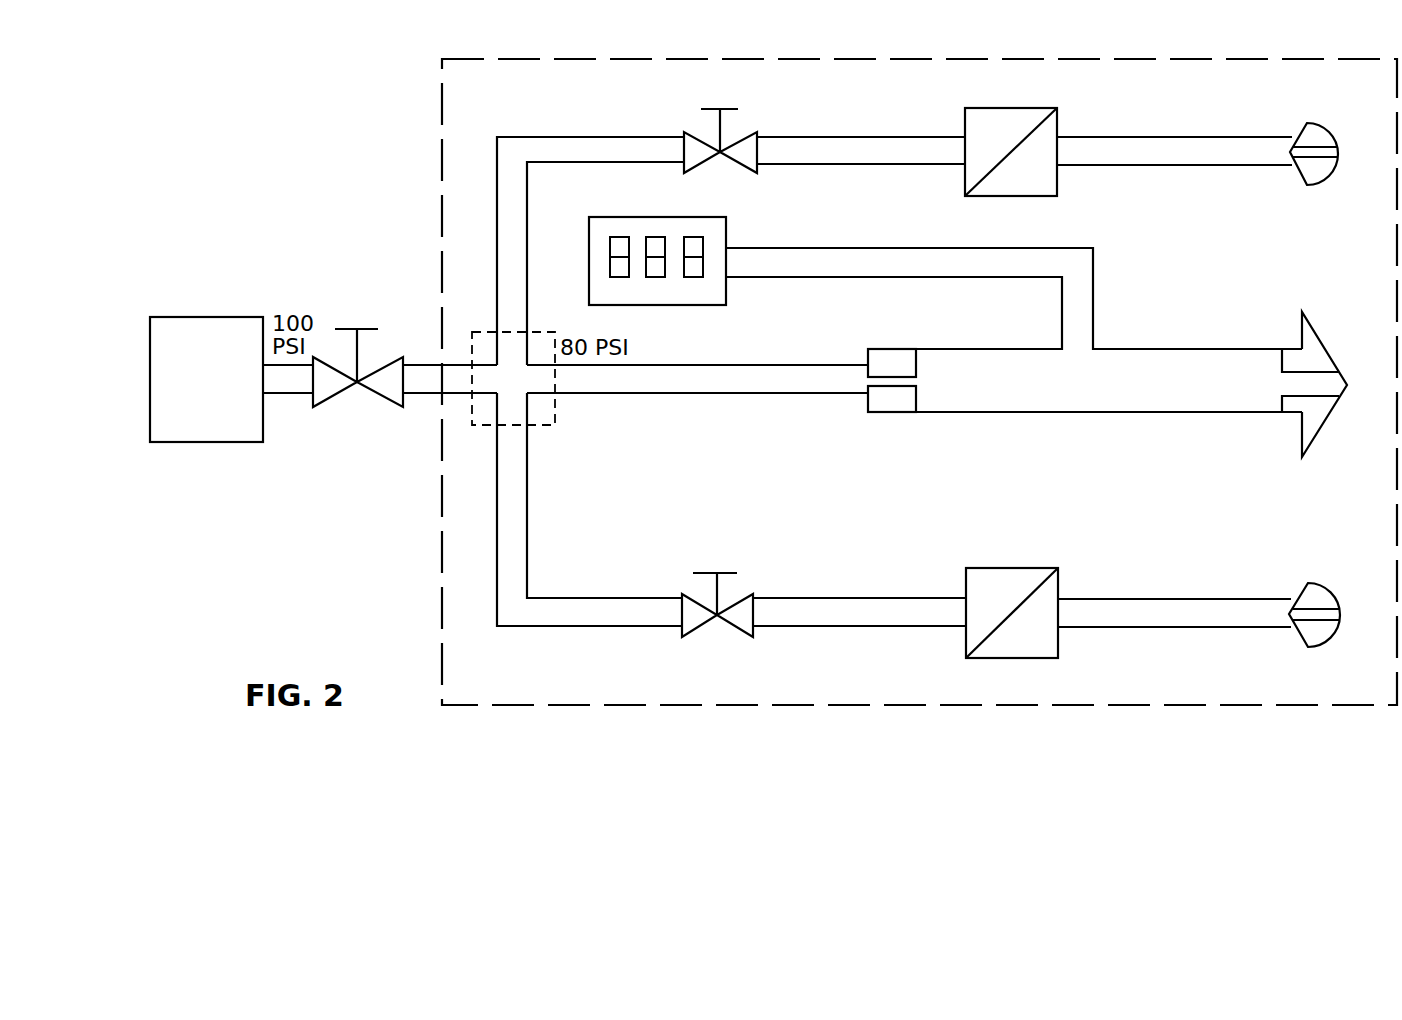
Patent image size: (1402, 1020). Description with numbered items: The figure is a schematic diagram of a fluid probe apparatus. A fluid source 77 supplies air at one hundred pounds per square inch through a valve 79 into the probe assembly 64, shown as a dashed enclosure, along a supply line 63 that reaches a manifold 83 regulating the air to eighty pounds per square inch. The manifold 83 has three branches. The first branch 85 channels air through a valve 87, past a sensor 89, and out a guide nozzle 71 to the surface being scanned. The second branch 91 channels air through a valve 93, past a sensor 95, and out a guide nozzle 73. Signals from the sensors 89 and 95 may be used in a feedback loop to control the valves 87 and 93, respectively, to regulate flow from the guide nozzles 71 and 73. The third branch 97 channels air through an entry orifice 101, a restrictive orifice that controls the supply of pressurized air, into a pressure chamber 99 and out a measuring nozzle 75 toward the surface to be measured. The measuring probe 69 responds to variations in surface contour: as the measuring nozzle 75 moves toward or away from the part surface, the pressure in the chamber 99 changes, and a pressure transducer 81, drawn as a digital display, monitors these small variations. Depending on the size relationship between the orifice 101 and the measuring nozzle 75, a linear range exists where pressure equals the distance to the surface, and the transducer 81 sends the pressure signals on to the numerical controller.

The probe assembly 64 is at (1254, 58).
The fluid source 77 is at (200, 442).
The valve 79 is at (370, 420).
The supply conduit 63 is at (427, 362).
The first branch 85 is at (497, 312).
The second branch 91 is at (497, 548).
The manifold 83 is at (556, 418).
The pressure transducer 81 is at (630, 305).
The valve 87 is at (705, 170).
The sensor 89 is at (1062, 180).
The guide nozzle 71 is at (1330, 177).
The third branch 97 is at (772, 394).
The entry orifice 101 is at (882, 381).
The pressure chamber 99 is at (1163, 413).
The measuring probe 69 is at (1270, 338).
The measuring nozzle 75 is at (1325, 415).
The valve 93 is at (700, 630).
The sensor 95 is at (1008, 658).
The guide nozzle 73 is at (1335, 635).